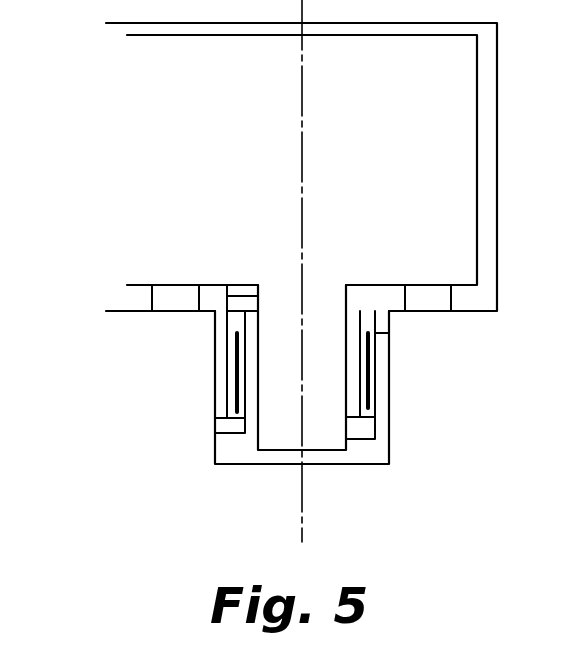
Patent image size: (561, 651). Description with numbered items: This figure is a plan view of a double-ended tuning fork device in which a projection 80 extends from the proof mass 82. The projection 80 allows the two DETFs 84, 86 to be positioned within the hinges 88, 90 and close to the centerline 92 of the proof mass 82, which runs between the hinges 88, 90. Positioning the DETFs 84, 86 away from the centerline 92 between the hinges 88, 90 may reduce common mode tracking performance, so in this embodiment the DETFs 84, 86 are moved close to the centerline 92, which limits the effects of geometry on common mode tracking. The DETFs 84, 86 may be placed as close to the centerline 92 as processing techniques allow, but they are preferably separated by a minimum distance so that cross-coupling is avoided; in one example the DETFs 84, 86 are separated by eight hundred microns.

The projection 80 is at (314, 420).
The proof mass 82 is at (143, 210).
The double-ended tuning fork (DETF) 84 is at (228, 388).
The double-ended tuning fork (DETF) 86 is at (377, 387).
The hinge 88 is at (176, 297).
The hinge 90 is at (427, 295).
The centerline 92 is at (303, 492).